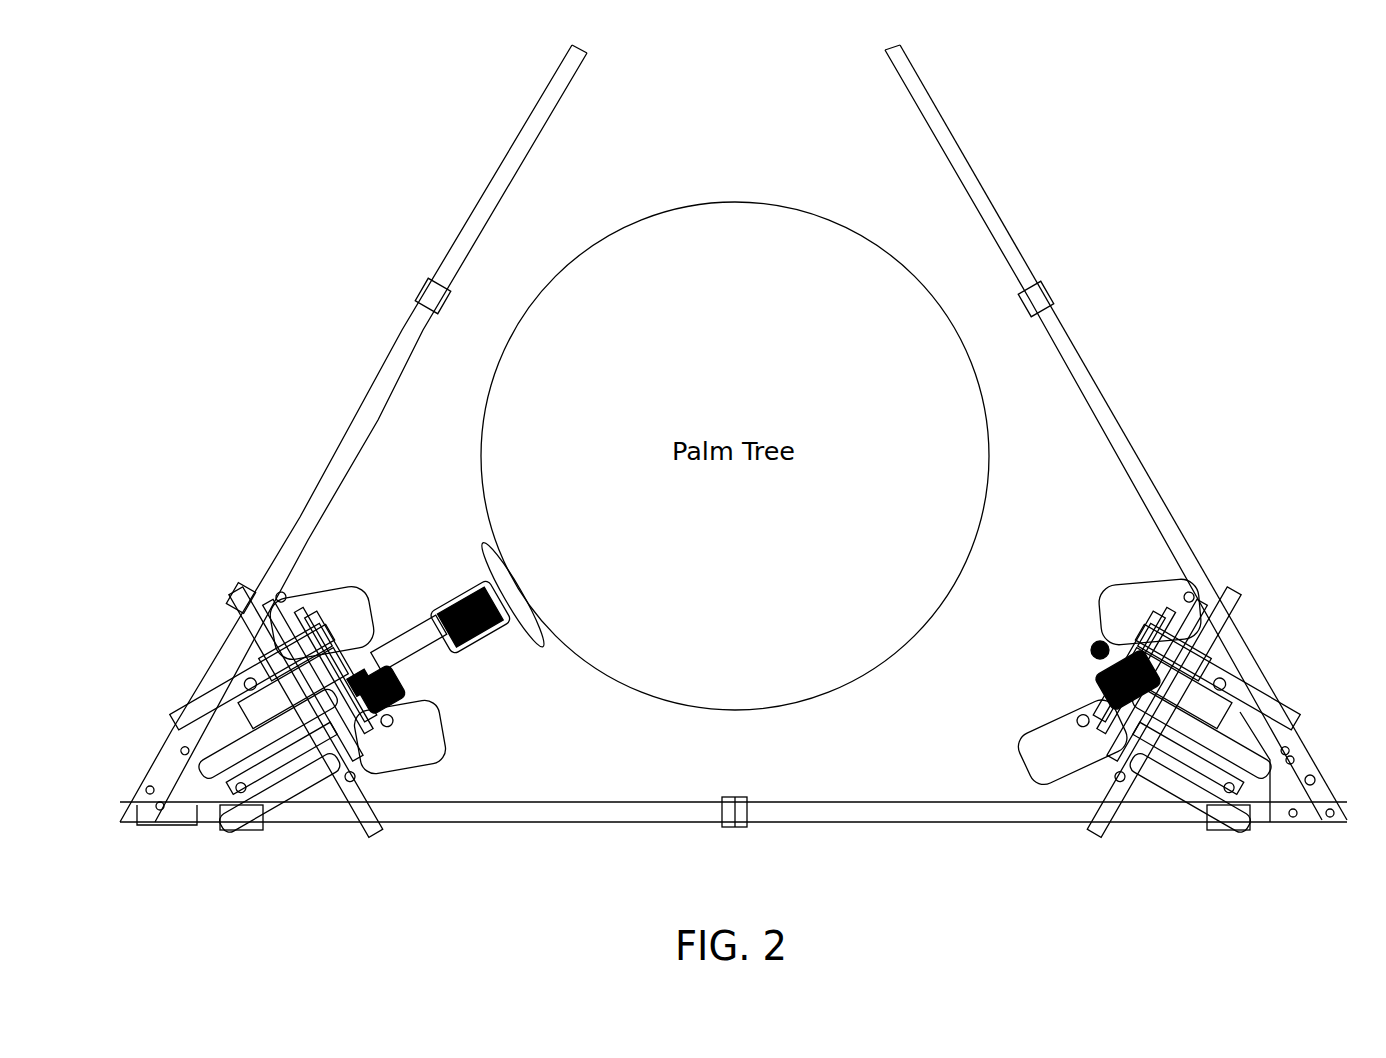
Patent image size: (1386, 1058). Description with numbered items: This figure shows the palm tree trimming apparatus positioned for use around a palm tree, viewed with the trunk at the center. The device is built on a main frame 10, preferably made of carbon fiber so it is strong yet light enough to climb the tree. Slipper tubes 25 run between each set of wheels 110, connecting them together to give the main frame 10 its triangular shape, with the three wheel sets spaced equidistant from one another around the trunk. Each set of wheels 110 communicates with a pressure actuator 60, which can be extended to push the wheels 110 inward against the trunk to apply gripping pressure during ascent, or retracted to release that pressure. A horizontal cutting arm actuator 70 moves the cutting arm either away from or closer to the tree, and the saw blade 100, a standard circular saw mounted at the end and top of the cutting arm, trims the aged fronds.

The main frame 10 is at (733, 478).
The slipper tubes 25 is at (476, 197).
The pressure actuator 60 is at (222, 760).
The horizontal cutting arm actuator 70 is at (392, 667).
The saw blade 100 is at (483, 572).
The wheels 110 is at (332, 612).